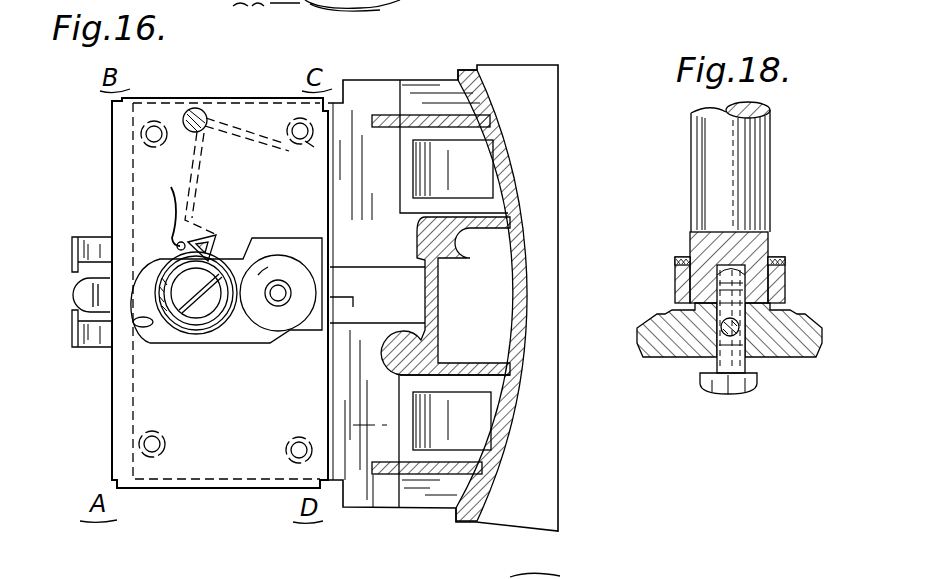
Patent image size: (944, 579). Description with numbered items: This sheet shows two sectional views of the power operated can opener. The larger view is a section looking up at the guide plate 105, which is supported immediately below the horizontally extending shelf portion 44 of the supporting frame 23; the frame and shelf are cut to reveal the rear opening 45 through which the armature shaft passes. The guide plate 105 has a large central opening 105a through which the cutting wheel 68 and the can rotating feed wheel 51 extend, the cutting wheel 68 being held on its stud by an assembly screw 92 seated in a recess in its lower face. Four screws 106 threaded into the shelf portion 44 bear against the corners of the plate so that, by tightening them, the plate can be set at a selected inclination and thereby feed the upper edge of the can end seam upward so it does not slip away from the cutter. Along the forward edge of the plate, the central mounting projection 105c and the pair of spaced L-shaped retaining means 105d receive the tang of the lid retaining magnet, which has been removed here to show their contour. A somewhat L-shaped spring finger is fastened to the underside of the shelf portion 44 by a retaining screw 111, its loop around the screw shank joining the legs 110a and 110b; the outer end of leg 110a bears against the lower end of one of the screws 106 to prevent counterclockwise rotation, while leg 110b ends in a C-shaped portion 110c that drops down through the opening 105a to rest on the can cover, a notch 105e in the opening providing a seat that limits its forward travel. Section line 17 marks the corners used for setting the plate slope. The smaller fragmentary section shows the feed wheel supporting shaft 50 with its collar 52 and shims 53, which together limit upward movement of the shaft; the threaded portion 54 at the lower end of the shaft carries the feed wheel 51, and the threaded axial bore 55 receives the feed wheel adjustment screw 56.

In FIG. 16, the guide plate 105 is at (112, 434).
In FIG. 16, the central opening 105a is at (150, 322).
In FIG. 16, the central mounting projection 105c is at (80, 292).
In FIG. 16, the L-shaped retaining means 105d is at (100, 238).
In FIG. 16, the notch 105e is at (173, 208).
In FIG. 16, the screws 106 is at (140, 133).
In FIG. 16, the retaining screw 111 is at (196, 106).
In FIG. 16, the leg of spring finger 110a is at (252, 128).
In FIG. 16, the leg of spring finger 110b is at (203, 174).
In FIG. 16, the C-shaped portion 110c is at (211, 240).
In FIG. 16, the cutting wheel 68 is at (196, 327).
In FIG. 16, the assembly screw 92 is at (212, 305).
In FIG. 16, the feed wheel 51 is at (290, 273).
In FIG. 18, the feed wheel 51 is at (673, 353).
In FIG. 16, the section line 17 is at (30, 305).
In FIG. 16, the shelf portion 44 is at (367, 504).
In FIG. 16, the supporting frame 23 is at (499, 145).
In FIG. 16, the rear opening 45 is at (428, 290).
In FIG. 18, the feed wheel supporting shaft 50 is at (750, 180).
In FIG. 18, the collar 52 is at (787, 290).
In FIG. 18, the shims 53 is at (790, 256).
In FIG. 18, the threaded axial bore 55 is at (720, 282).
In FIG. 18, the threaded portion 54 is at (783, 350).
In FIG. 18, the feed wheel adjustment screw 56 is at (727, 365).